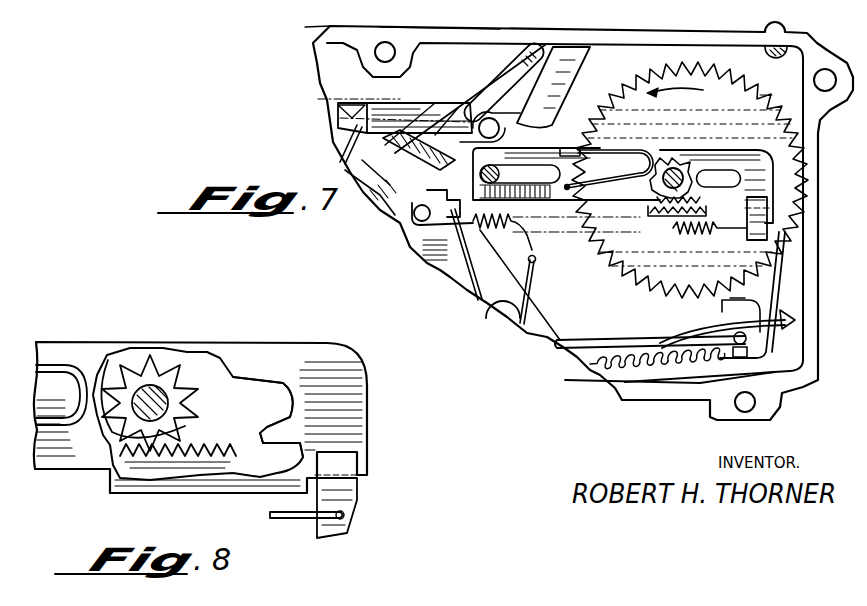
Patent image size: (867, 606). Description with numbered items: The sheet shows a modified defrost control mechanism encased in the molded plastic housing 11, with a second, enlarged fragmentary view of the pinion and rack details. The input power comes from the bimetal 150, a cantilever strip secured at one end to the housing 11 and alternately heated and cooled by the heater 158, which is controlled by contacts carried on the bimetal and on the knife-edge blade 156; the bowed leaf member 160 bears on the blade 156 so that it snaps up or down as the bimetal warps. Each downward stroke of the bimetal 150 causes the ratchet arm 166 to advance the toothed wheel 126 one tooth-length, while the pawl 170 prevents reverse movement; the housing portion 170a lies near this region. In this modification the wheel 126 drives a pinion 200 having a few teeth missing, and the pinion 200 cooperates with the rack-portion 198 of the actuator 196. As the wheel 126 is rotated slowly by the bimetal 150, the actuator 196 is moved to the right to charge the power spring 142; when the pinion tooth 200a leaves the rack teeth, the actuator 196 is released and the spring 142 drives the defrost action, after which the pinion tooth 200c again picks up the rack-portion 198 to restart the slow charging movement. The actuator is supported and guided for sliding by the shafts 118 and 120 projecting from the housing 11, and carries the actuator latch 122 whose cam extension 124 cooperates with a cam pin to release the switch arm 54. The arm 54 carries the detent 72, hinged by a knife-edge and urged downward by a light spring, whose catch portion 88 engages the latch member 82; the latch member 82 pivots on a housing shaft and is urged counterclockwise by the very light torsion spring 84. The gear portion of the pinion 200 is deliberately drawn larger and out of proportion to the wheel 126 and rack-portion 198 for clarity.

In FIG. 7, the housing 11 is at (423, 33).
In FIG. 7, the arm 54 is at (345, 140).
In FIG. 7, the detent member 72 is at (525, 68).
In FIG. 7, the latch member 82 is at (437, 262).
In FIG. 7, the torsion spring 84 is at (463, 288).
In FIG. 7, the catch portion 88 is at (430, 165).
In FIG. 7, the shaft 118 is at (510, 178).
In FIG. 7, the shaft 120 is at (667, 170).
In FIG. 7, the actuator latch 122 is at (410, 110).
In FIG. 7, the cam extension 124 is at (330, 114).
In FIG. 7, the wheel 126 is at (733, 107).
In FIG. 7, the power spring 142 is at (513, 226).
In FIG. 7, the bimetal 150 is at (592, 370).
In FIG. 7, the blade 156 is at (582, 338).
In FIG. 7, the heater 158 is at (673, 385).
In FIG. 7, the leaf member 160 is at (695, 338).
In FIG. 7, the ratchet arm 166 is at (787, 290).
In FIG. 7, the pawl 170 is at (637, 63).
In FIG. 7, the housing cover portion 170a is at (286, 13).
In FIG. 7, the actuator 196 is at (632, 150).
In FIG. 8, the actuator 196 is at (248, 355).
In FIG. 7, the rack-portion 198 is at (656, 218).
In FIG. 8, the rack-portion 198 is at (277, 437).
In FIG. 7, the pinion 200 is at (695, 170).
In FIG. 8, the pinion 200 is at (125, 370).
In FIG. 8, the pinion tooth 200a is at (213, 427).
In FIG. 8, the pinion tooth 200c is at (113, 445).